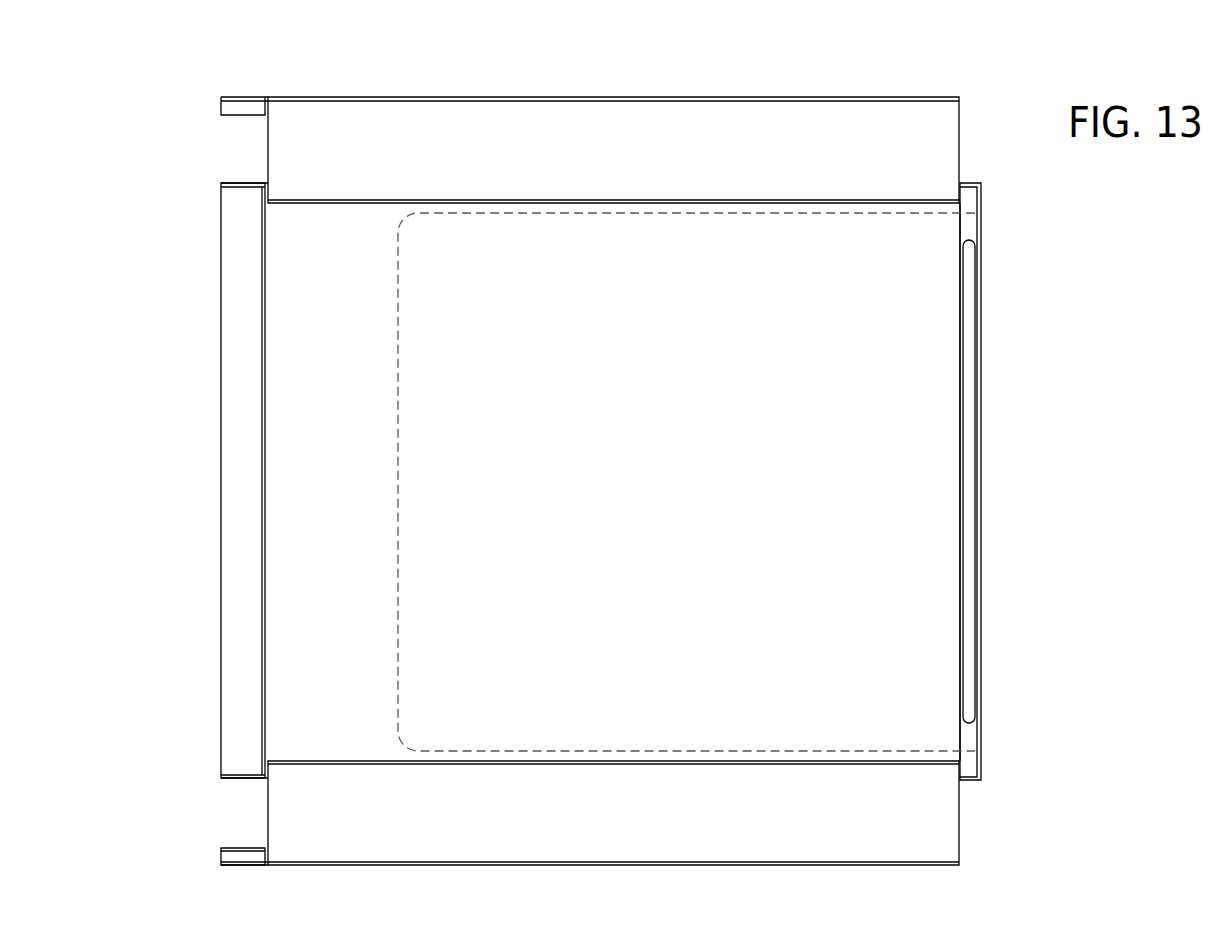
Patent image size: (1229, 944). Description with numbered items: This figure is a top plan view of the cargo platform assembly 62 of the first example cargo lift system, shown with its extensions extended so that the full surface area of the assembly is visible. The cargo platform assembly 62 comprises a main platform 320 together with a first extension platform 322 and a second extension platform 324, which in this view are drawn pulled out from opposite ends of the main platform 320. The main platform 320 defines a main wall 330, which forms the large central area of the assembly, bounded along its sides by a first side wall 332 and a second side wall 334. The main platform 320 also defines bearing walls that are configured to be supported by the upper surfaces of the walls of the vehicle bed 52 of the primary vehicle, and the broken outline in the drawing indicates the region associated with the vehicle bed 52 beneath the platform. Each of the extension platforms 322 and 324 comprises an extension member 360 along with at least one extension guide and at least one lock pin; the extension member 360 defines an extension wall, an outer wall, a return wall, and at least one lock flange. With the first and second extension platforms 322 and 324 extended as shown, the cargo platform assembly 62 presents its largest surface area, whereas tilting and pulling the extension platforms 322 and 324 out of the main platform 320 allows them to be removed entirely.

The vehicle bed 52 is at (397, 348).
The cargo platform assembly 62 is at (218, 340).
The main platform 320 is at (643, 441).
The first extension platform 322 is at (966, 130).
The second extension platform 324 is at (968, 822).
The main wall 330 is at (643, 477).
The first side wall 332 is at (240, 182).
The second side wall 334 is at (238, 779).
The extension member 360 is at (643, 822).